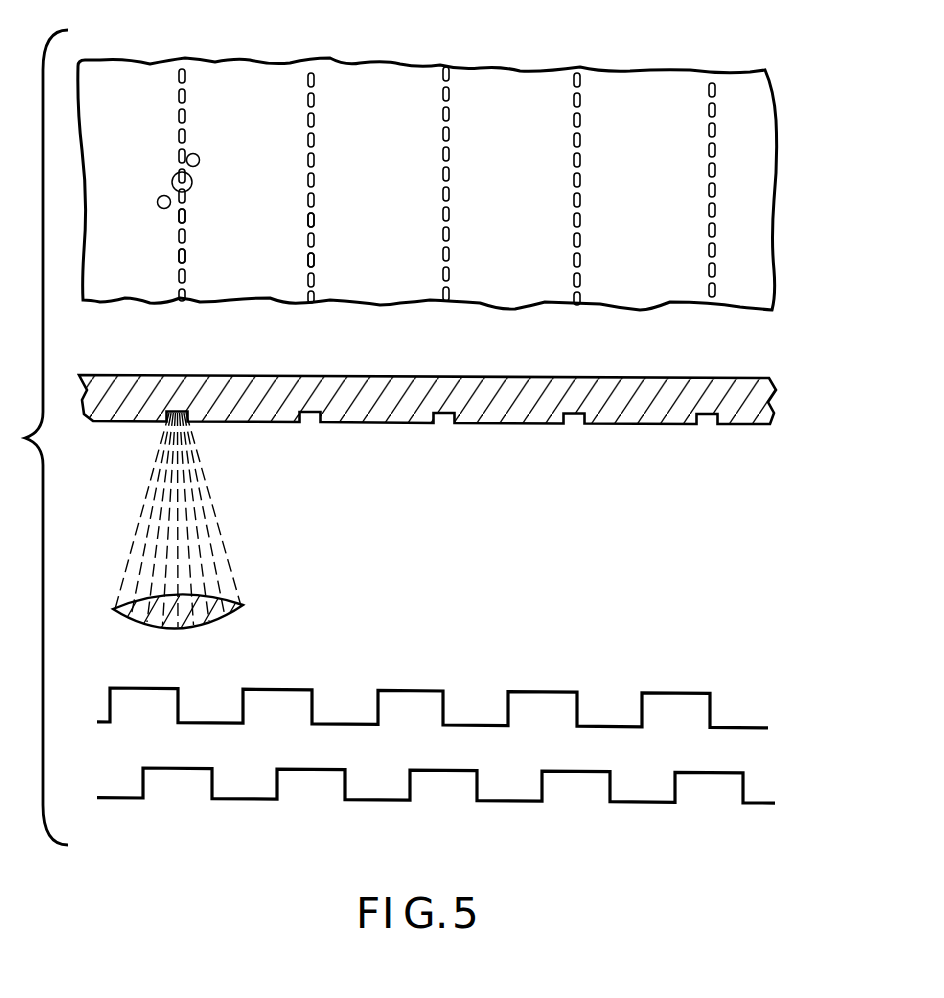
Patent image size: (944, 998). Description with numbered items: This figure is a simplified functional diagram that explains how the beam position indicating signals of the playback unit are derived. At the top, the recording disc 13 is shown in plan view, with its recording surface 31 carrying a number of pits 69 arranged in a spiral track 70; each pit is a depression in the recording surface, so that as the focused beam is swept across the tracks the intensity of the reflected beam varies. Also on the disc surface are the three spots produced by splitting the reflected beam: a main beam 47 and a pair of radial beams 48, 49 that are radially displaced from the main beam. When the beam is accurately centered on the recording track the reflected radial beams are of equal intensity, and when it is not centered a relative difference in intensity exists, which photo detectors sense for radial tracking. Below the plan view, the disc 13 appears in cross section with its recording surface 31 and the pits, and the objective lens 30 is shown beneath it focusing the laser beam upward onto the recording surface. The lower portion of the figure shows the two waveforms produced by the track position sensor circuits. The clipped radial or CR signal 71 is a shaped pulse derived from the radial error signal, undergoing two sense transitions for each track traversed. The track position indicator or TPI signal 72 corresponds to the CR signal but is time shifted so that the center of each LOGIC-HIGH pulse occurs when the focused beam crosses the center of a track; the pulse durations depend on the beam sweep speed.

The video disc 13 is at (548, 60).
The recording surface 31 is at (776, 162).
The spiral track 70 is at (192, 125).
The pits 69 is at (308, 227).
The radial beam 48 is at (200, 160).
The main beam 47 is at (191, 187).
The radial beam 49 is at (160, 208).
The objective lens 30 is at (208, 603).
The clipped radial (CR) signal 71 is at (148, 687).
The track position indicator (TPI) signal 72 is at (118, 797).